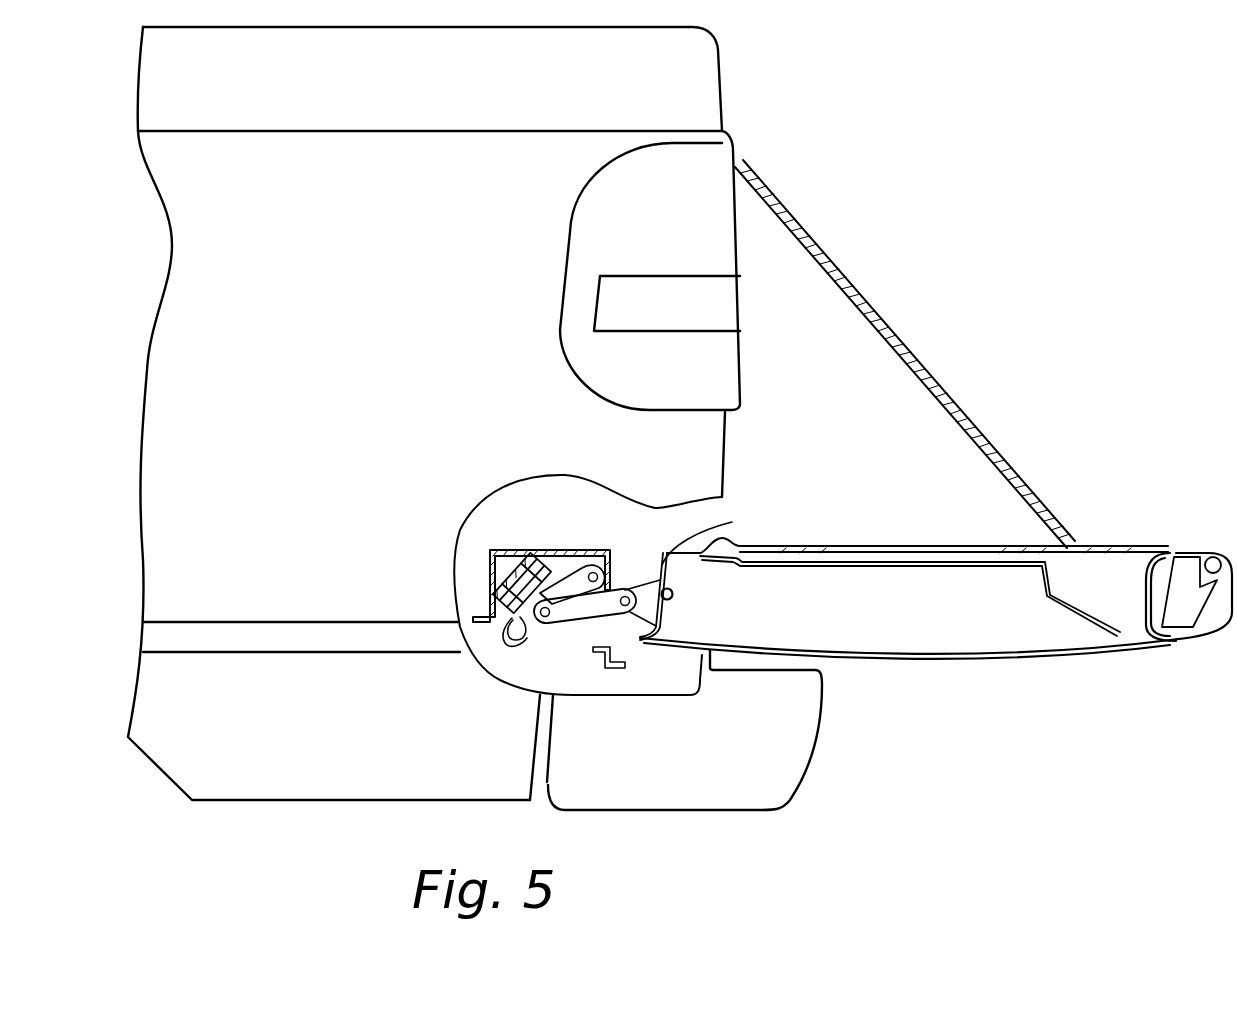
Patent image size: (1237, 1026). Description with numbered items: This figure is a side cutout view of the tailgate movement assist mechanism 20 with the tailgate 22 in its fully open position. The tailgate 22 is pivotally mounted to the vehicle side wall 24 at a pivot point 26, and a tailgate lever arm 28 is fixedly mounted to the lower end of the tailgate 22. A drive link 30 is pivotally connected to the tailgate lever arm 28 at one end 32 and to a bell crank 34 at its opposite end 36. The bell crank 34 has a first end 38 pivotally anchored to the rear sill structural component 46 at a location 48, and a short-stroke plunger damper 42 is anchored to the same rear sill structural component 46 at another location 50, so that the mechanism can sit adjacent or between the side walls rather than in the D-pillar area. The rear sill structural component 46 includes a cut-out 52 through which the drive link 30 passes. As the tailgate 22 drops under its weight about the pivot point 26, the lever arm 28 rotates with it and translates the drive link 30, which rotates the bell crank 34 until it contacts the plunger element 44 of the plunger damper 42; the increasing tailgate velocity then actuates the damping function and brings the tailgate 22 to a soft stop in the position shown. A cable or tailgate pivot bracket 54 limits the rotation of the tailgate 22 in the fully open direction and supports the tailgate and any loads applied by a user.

The tailgate movement assist mechanism 20 is at (774, 606).
The tailgate 22 is at (1046, 648).
The vehicle side wall 24 is at (355, 375).
The pivot point 26 is at (674, 576).
The tailgate lever arm 28 is at (704, 541).
The drive link 30 is at (574, 615).
The end of drive link 32 is at (628, 592).
The bell crank 34 is at (560, 578).
The opposite end of drive link 36 is at (542, 622).
The first end of bell crank 38 is at (605, 593).
The short-stroke plunger damper 42 is at (512, 636).
The plunger element 44 is at (540, 619).
The rear sill structural component 46 is at (532, 556).
The anchoring location of bell crank 48 is at (580, 574).
The anchoring location of plunger damper 50 is at (492, 568).
The cut-out 52 is at (603, 641).
The cable or tailgate pivot bracket 54 is at (913, 353).